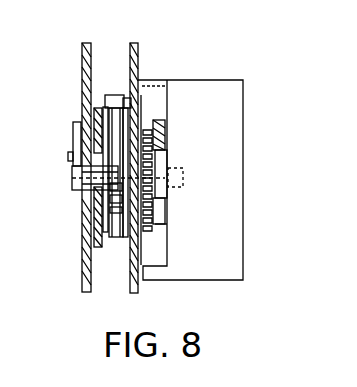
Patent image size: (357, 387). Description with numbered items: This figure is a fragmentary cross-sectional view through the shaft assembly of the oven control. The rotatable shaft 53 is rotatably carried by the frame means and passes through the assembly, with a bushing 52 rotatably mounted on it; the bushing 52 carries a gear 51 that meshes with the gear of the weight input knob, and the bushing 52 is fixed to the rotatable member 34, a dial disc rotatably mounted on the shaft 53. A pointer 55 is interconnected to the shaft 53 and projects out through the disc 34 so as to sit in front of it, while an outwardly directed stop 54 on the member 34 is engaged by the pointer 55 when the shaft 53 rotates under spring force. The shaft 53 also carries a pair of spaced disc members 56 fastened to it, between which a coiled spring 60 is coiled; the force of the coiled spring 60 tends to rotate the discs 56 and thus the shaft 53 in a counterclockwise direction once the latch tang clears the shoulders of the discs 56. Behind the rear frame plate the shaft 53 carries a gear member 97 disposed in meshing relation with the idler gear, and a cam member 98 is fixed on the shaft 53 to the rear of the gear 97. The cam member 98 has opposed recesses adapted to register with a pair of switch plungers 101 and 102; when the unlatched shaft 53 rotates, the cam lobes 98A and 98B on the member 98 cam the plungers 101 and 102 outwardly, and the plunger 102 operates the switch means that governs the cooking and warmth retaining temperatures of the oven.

The rotatable member 34 is at (84, 205).
The gear 51 is at (92, 224).
The bushing 52 is at (93, 165).
The rotatable shaft 53 is at (93, 178).
The stop 54 is at (69, 157).
The pointer 55 is at (73, 128).
The disc members 56 is at (117, 200).
The coiled spring 60 is at (118, 110).
The gear member 97 is at (148, 128).
The cam member 98 is at (168, 153).
The cam lobe 98A is at (168, 145).
The cam lobe 98B is at (170, 161).
The switch plunger 101 is at (166, 128).
The switch plunger 102 is at (167, 207).